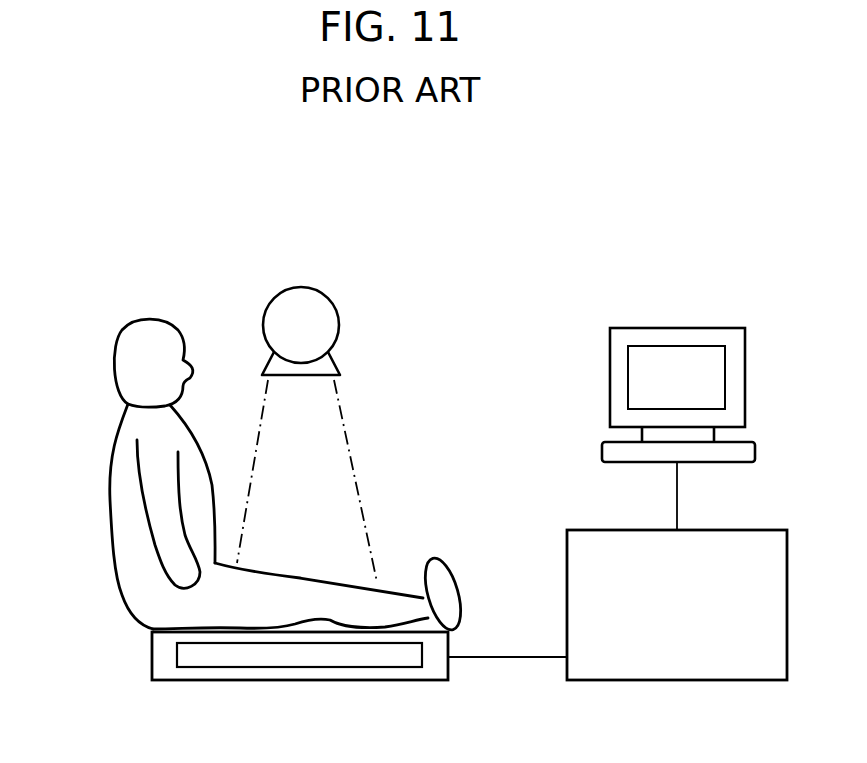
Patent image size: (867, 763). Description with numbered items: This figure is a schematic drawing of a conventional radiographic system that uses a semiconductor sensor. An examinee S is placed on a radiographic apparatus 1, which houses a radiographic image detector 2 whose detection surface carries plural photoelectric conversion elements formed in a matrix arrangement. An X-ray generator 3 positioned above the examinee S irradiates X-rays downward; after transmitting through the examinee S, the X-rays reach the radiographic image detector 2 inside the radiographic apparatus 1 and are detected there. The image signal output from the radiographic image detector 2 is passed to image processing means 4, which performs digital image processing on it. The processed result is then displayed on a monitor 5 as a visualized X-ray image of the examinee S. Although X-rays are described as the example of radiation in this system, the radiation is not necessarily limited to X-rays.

The examinee S is at (108, 507).
The radiographic apparatus 1 is at (209, 681).
The radiographic image detector 2 is at (367, 657).
The X-ray generator 3 is at (300, 300).
The image processing means 4 is at (677, 665).
The monitor 5 is at (668, 357).